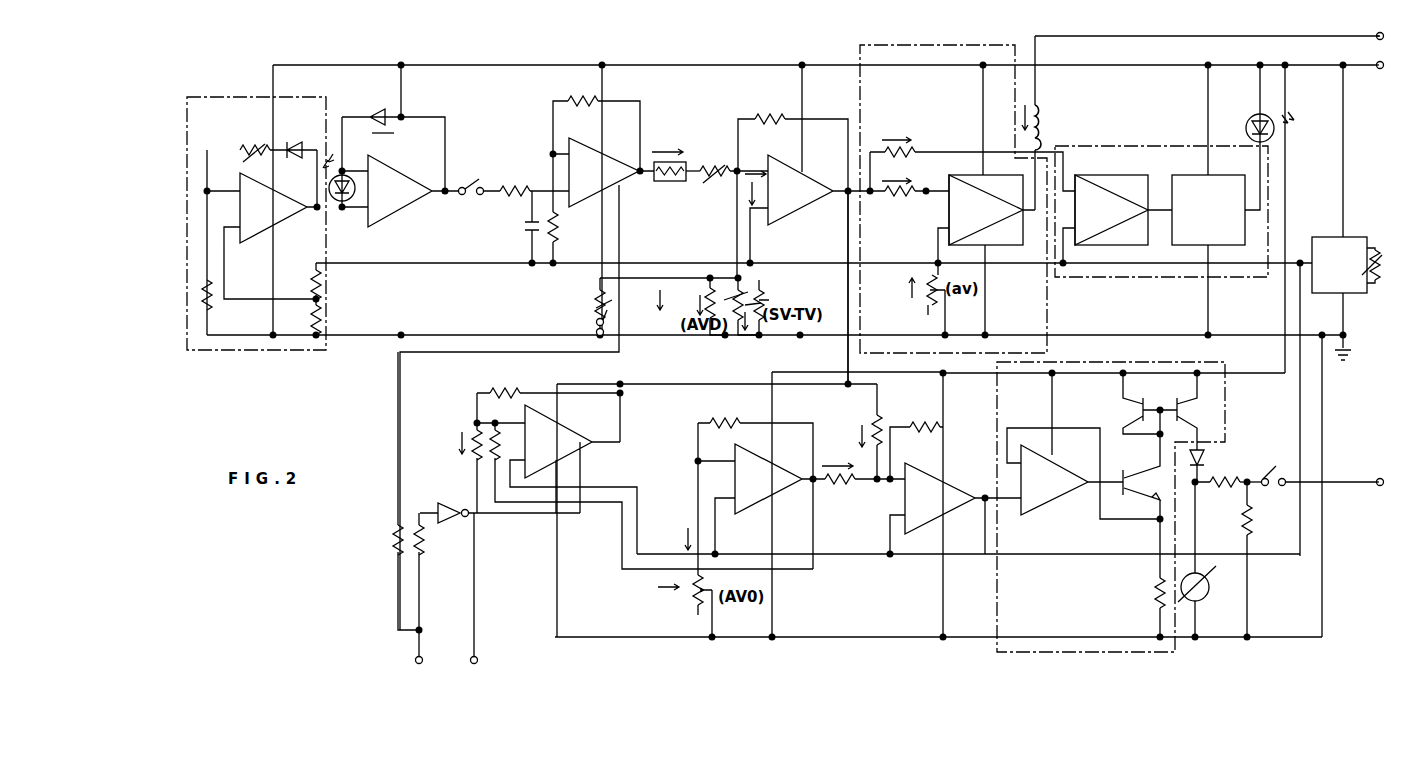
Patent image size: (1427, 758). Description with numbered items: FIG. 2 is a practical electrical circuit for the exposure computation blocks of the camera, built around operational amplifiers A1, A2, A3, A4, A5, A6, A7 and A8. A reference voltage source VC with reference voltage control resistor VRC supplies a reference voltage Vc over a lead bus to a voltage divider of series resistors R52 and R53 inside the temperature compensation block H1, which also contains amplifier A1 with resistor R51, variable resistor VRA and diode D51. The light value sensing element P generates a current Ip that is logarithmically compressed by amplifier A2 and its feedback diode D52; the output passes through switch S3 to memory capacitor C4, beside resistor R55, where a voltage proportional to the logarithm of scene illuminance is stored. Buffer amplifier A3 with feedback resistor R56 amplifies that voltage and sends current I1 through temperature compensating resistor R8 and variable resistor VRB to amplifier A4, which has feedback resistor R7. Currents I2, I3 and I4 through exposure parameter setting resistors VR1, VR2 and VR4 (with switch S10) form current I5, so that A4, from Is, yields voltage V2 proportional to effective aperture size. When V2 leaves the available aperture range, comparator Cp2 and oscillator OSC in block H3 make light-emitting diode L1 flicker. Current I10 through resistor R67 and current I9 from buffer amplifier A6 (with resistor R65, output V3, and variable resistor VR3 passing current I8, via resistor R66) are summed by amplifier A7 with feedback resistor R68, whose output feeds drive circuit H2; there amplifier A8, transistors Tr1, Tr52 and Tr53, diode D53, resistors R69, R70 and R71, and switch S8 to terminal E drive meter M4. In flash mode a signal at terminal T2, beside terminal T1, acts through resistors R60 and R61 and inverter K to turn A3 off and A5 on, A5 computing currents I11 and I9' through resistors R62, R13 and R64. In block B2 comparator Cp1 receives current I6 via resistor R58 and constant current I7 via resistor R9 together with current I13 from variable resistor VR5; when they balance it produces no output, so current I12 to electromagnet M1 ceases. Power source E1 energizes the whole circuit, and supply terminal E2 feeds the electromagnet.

The operational amplifier A1 is at (262, 236).
The operational amplifier A2 is at (400, 191).
The buffer amplifier A3 is at (602, 172).
The operational amplifier A4 is at (803, 171).
The operational amplifier A5 is at (557, 479).
The buffer amplifier A6 is at (760, 499).
The operational amplifier A7 is at (955, 508).
The operational amplifier A8 is at (1083, 446).
The resistor R51 is at (196, 293).
The resistor R52 is at (299, 284).
The resistor R53 is at (299, 320).
The resistor R55 is at (570, 208).
The resistor R56 is at (596, 123).
The resistor R7 is at (793, 239).
The temperature compensating resistor R8 is at (677, 183).
The resistor R9 is at (909, 211).
The resistor R58 is at (972, 161).
The resistor R13 is at (651, 495).
The resistor R60 is at (387, 491).
The resistor R61 is at (437, 588).
The resistor R62 is at (462, 453).
The resistor R64 is at (548, 407).
The resistor R65 is at (755, 487).
The resistor R66 is at (859, 490).
The resistor R67 is at (893, 431).
The resistor R68 is at (934, 442).
The resistor R69 is at (1140, 578).
The resistor R70 is at (1235, 492).
The resistor R71 is at (1265, 559).
The variable resistor VRA is at (249, 144).
The variable resistor VRB is at (732, 164).
The reference voltage control resistor VRC is at (1389, 265).
The exposure control parameter setting variable resistor VR1 is at (765, 307).
The exposure control parameter setting variable resistor VR2 is at (755, 294).
The variable resistor VR3 is at (686, 606).
The exposure control parameter setting variable resistor VR4 is at (638, 294).
The variable resistor VR5 is at (919, 299).
The diode D51 is at (294, 143).
The diode D52 is at (393, 140).
The diode D53 is at (1215, 468).
The light value sensing element P is at (339, 172).
The photocurrent Ip is at (383, 143).
The light-emitting diode L1 is at (1279, 130).
The memory capacitor C4 is at (519, 227).
The switch S3 is at (514, 180).
The switch S8 is at (1323, 471).
The switch S10 is at (641, 323).
The inverter K is at (500, 574).
The comparator Cp1 is at (986, 219).
The comparator Cp2 is at (1117, 219).
The oscillator OSC is at (1216, 200).
The electromagnet M1 is at (1052, 123).
The meter M4 is at (1206, 559).
The reference voltage source VC is at (1339, 212).
The block B2 is at (953, 190).
The transistor Tr1 is at (1143, 478).
The transistor Tr52 is at (1120, 412).
The transistor Tr53 is at (1190, 412).
The terminal E is at (1387, 484).
The electric power source E1 is at (1392, 67).
The power supply terminal E2 is at (1392, 38).
The terminal T1 is at (490, 663).
The terminal T2 is at (434, 663).
The temperature compensation block H1 is at (264, 323).
The drive circuit H2 is at (1129, 612).
The aperture warning block H3 is at (1264, 219).
The reference voltage Vc is at (1289, 398).
The voltage signal V2 is at (819, 205).
The output voltage V3 is at (825, 453).
The current signal I1 is at (667, 143).
The current I2 is at (654, 299).
The current I3 is at (701, 300).
The current I4 is at (741, 323).
The current signal I5 is at (745, 194).
The current I6 is at (896, 131).
The current signal I7 is at (896, 171).
The current I8 is at (681, 539).
The current signal I9 is at (837, 457).
The current signal I9' is at (657, 587).
The current signal I10 is at (856, 436).
The current I11 is at (453, 443).
The current I12 is at (1012, 118).
The current signal I13 is at (903, 286).
The current signal Is is at (755, 164).